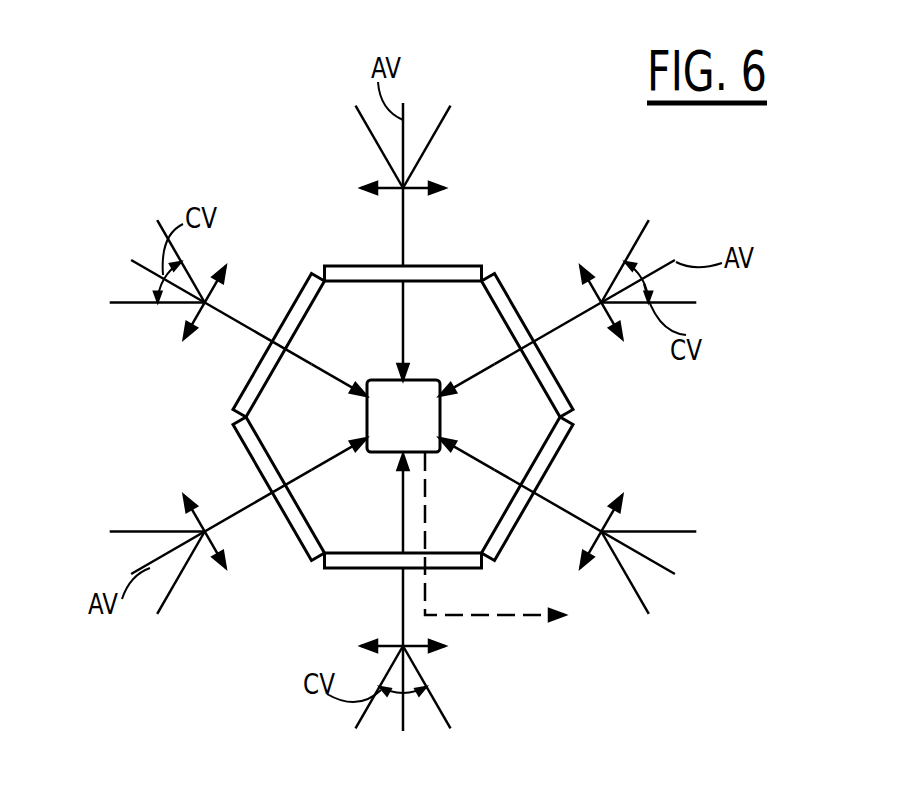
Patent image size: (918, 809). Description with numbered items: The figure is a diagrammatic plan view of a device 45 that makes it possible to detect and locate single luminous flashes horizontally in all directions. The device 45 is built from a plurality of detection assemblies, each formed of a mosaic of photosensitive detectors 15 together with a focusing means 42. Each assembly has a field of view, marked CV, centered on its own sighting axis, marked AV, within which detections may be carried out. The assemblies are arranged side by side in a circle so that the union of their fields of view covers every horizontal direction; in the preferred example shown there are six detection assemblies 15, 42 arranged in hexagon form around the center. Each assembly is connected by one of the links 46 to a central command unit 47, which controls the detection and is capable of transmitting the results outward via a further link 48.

The device 45 is at (205, 157).
The mosaic of photosensitive detectors 15 is at (342, 272).
The focusing means 42 is at (207, 323).
The links 46 is at (405, 328).
The command unit 47 is at (379, 452).
The link 48 is at (477, 618).